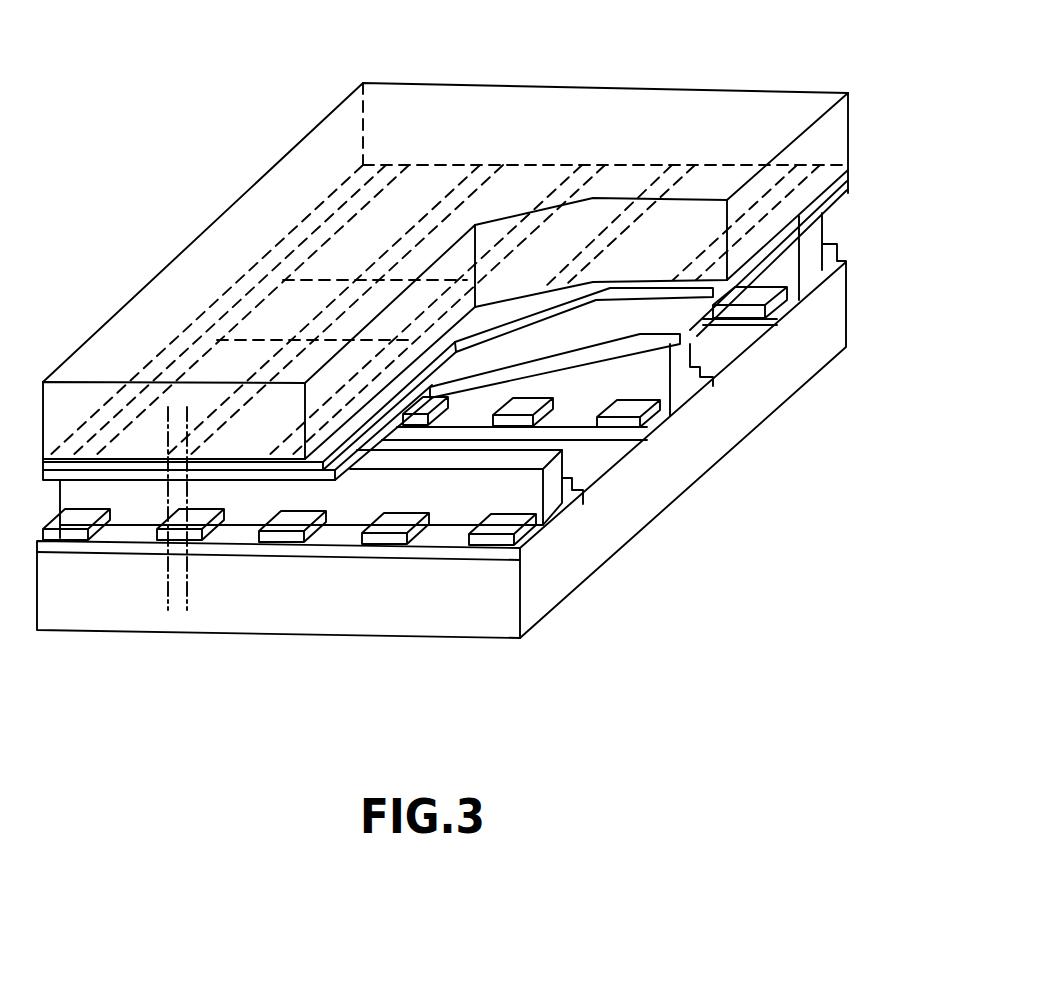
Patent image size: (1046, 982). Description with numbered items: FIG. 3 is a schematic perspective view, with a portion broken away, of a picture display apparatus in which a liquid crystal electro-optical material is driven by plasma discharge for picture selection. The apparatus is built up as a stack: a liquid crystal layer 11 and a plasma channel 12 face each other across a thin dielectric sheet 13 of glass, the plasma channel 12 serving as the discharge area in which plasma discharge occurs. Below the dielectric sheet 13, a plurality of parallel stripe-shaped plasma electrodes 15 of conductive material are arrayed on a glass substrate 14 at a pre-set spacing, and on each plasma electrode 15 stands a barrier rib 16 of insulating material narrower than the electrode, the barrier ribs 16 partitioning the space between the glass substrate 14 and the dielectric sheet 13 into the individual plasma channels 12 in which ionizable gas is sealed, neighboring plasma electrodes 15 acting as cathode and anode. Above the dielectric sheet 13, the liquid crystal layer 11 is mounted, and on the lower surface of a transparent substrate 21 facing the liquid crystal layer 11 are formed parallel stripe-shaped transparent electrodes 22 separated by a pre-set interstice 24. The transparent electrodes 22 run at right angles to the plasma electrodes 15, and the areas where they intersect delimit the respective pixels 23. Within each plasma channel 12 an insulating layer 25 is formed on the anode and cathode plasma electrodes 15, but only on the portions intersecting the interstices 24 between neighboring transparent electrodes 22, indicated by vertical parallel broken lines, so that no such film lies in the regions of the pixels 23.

The liquid crystal layer 11 is at (690, 278).
The plasma channel 12 is at (587, 472).
The dielectric sheet 13 is at (648, 310).
The glass substrate 14 is at (750, 383).
The plasma electrode 15 is at (333, 535).
The barrier rib 16 is at (447, 507).
The transparent substrate 21 is at (829, 130).
The transparent electrode 22 is at (436, 165).
The pixel 23 is at (272, 312).
The interstice 24 is at (700, 178).
The insulating layer 25 is at (283, 525).